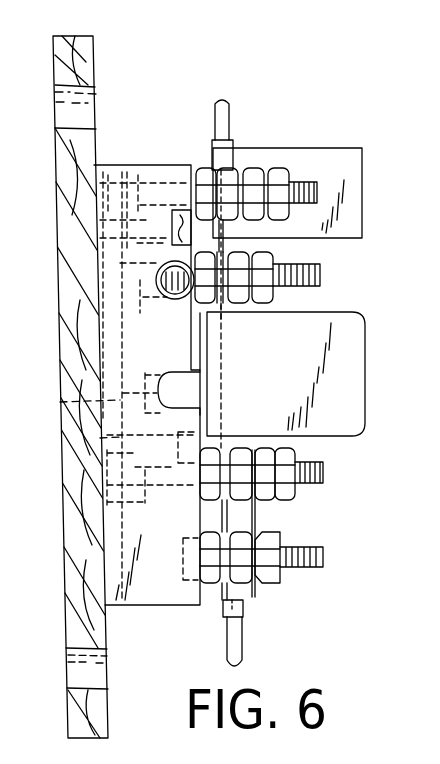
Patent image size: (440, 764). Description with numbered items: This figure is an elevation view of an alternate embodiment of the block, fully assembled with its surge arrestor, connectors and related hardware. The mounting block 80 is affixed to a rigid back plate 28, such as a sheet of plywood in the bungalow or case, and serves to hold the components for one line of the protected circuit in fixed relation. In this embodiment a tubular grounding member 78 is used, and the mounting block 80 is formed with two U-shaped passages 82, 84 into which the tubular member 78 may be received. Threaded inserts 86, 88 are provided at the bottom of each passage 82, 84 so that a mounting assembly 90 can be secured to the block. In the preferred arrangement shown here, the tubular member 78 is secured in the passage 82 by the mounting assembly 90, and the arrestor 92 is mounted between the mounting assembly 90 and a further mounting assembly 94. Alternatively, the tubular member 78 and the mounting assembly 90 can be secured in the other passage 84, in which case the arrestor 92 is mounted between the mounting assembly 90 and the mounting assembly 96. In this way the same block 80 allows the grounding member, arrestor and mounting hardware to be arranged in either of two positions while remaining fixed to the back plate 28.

The back plate 28 is at (74, 640).
The tubular grounding member 78 is at (157, 278).
The mounting block 80 is at (157, 173).
The U-shaped passage 82 is at (178, 298).
The U-shaped passage 84 is at (190, 420).
The threaded insert 86 is at (150, 318).
The threaded insert 88 is at (60, 403).
The mounting assembly 90 is at (310, 292).
The arrestor 92 is at (345, 423).
The mounting assembly 94 is at (305, 497).
The mounting assembly 96 is at (297, 168).